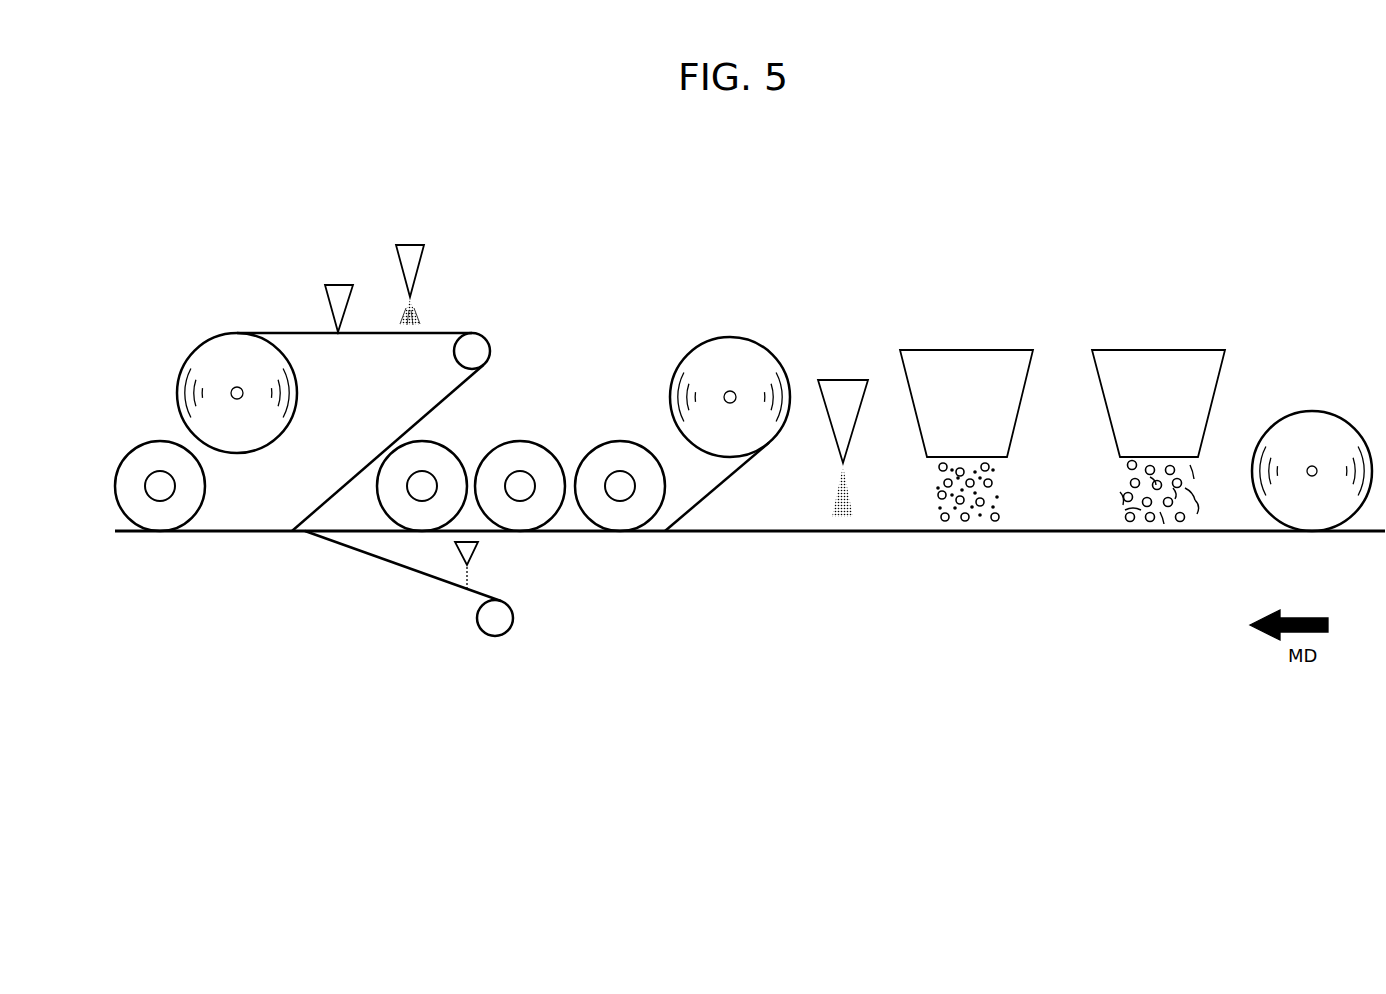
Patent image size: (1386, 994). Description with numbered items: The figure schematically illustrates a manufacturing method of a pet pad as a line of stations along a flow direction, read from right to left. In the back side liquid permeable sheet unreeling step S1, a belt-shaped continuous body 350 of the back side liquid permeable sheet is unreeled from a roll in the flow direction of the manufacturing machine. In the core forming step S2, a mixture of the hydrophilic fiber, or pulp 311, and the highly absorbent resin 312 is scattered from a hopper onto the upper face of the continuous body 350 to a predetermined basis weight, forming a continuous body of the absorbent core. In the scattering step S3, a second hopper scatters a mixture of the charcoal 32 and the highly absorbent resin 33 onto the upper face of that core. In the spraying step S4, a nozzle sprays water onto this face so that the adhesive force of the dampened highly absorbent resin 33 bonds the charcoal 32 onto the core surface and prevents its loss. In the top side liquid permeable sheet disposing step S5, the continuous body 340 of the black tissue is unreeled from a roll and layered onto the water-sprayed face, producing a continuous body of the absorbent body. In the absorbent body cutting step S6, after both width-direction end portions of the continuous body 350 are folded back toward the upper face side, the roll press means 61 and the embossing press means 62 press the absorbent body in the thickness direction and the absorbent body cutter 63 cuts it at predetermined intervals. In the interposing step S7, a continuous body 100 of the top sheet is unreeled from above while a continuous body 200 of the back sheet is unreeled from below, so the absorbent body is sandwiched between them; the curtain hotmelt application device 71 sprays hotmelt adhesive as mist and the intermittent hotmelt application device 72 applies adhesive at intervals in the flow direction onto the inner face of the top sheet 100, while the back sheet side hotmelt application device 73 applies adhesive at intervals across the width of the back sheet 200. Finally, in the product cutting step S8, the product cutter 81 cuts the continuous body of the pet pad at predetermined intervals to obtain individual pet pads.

The continuous body of the top sheet 100 is at (292, 331).
The continuous body of the back sheet 200 is at (403, 570).
The curtain hotmelt application device 71 is at (410, 250).
The intermittent hotmelt application device 72 is at (338, 288).
The back sheet side hotmelt application device 73 is at (473, 543).
The product cutter 81 is at (138, 443).
The roll press means 61 is at (622, 441).
The embossing press means 62 is at (547, 441).
The absorbent body cutter 63 is at (447, 441).
The continuous body of the black tissue 340 is at (720, 480).
The continuous body of the back side liquid permeable sheet 350 is at (1342, 415).
The charcoal 32 is at (997, 495).
The highly absorbent resin 33 is at (987, 466).
The hydrophilic fiber (pulp) 311 is at (1192, 492).
The highly absorbent resin 312 is at (1133, 470).
The back side liquid permeable sheet unreeling step S1 is at (1305, 383).
The core forming step S2 is at (1152, 324).
The scattering step S3 is at (959, 324).
The spraying step S4 is at (838, 353).
The top side liquid permeable sheet disposing step S5 is at (725, 304).
The absorbent body cutting step S6 is at (506, 391).
The interposing step S7 is at (367, 199).
The product cutting step S8 is at (132, 324).